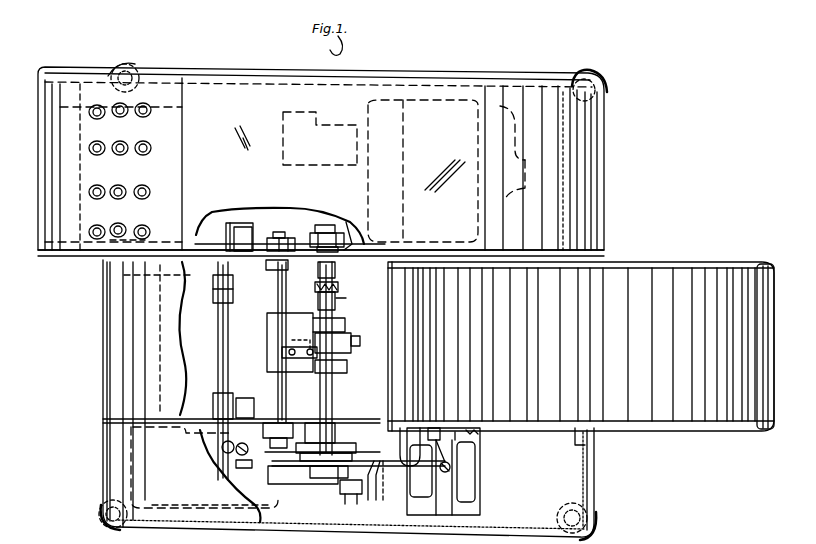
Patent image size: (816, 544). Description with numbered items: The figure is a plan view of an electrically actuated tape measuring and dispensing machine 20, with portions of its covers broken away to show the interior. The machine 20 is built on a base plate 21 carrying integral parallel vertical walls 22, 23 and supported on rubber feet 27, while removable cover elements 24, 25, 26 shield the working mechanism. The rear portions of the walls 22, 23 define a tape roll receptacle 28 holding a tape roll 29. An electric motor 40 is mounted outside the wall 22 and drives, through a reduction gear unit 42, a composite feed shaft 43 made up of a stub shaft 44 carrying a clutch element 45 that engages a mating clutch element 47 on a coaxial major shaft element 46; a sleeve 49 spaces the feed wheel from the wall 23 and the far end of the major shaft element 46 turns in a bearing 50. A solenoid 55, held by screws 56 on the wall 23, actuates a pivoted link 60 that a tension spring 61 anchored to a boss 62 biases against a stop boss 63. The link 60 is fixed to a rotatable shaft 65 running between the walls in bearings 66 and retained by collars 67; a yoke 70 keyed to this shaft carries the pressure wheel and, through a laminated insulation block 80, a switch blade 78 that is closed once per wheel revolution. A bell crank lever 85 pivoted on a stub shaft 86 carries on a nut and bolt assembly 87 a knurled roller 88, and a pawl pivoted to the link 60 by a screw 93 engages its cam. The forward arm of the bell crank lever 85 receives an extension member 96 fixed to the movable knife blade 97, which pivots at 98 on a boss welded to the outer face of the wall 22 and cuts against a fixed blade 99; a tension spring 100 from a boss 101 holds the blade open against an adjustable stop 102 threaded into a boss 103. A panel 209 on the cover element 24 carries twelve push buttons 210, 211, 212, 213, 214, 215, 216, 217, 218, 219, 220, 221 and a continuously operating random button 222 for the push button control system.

The machine 20 is at (660, 130).
The base plate 21 is at (596, 484).
The interior vertical wall 22 is at (86, 262).
The interior vertical wall 23 is at (125, 430).
The cover element 24 is at (552, 200).
The cover element 25 is at (115, 348).
The cover element 26 is at (132, 476).
The rubber feet 27 is at (128, 64).
The tape roll receptacle 28 is at (278, 212).
The tape roll 29 is at (282, 214).
The electric motor 40 is at (456, 100).
The reduction gear unit 42 is at (300, 155).
The composite feed shaft 43 is at (364, 298).
The stub shaft 44 is at (346, 236).
The clutch element 45 is at (338, 273).
The major shaft element 46 is at (340, 307).
The clutch element 47 is at (339, 288).
The sleeve 49 is at (336, 400).
The bearing 50 is at (352, 445).
The solenoid 55 is at (488, 467).
The screws 56 is at (480, 440).
The link 60 is at (366, 543).
The tension spring 61 is at (450, 470).
The boss 62 is at (457, 430).
The stop boss 63 is at (440, 430).
The rotatable shaft 65 is at (278, 306).
The bearings 66 is at (270, 262).
The collars 67 is at (282, 236).
The yoke 70 is at (296, 322).
The switch blade 78 is at (344, 372).
The laminated insulation block 80 is at (282, 352).
The bell crank lever 85 is at (356, 476).
The stub shaft 86 is at (322, 440).
The nut and bolt assembly 87 is at (338, 499).
The roller 88 is at (378, 458).
The screw 93 is at (318, 478).
The extension member 96 is at (215, 386).
The knife blade 97 is at (232, 334).
The pivot 98 is at (218, 228).
The fixed blade 99 is at (212, 286).
The tension spring 100 is at (238, 453).
The boss 101 is at (222, 446).
The adjustable stop 102 is at (245, 474).
The boss 103 is at (249, 393).
The panel 209 is at (178, 96).
The push button 210 is at (146, 102).
The push button 211 is at (150, 148).
The push button 212 is at (150, 192).
The push button 213 is at (160, 224).
The push button 214 is at (118, 102).
The push button 215 is at (124, 142).
The push button 216 is at (112, 190).
The push button 217 is at (118, 236).
The push button 218 is at (95, 104).
The push button 219 is at (88, 148).
The push button 220 is at (88, 192).
The push button 221 is at (88, 234).
The random button 222 is at (126, 190).